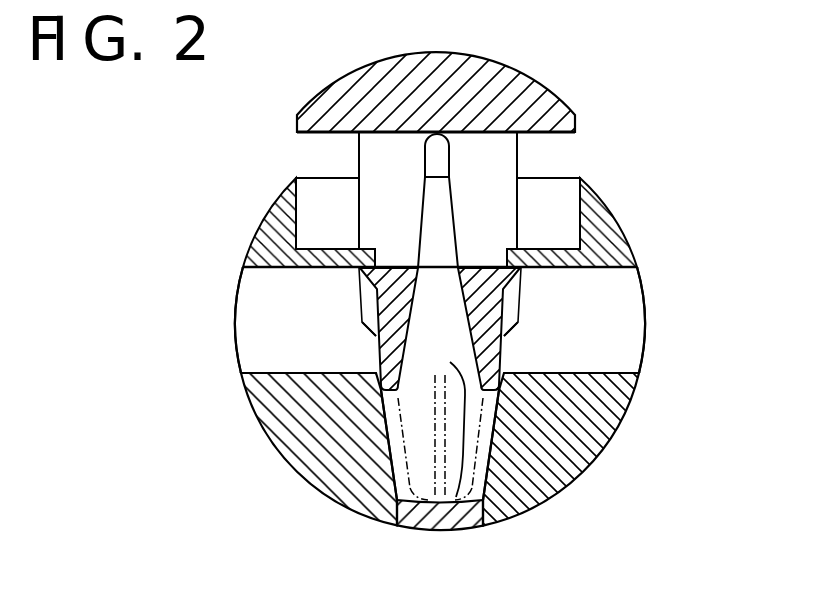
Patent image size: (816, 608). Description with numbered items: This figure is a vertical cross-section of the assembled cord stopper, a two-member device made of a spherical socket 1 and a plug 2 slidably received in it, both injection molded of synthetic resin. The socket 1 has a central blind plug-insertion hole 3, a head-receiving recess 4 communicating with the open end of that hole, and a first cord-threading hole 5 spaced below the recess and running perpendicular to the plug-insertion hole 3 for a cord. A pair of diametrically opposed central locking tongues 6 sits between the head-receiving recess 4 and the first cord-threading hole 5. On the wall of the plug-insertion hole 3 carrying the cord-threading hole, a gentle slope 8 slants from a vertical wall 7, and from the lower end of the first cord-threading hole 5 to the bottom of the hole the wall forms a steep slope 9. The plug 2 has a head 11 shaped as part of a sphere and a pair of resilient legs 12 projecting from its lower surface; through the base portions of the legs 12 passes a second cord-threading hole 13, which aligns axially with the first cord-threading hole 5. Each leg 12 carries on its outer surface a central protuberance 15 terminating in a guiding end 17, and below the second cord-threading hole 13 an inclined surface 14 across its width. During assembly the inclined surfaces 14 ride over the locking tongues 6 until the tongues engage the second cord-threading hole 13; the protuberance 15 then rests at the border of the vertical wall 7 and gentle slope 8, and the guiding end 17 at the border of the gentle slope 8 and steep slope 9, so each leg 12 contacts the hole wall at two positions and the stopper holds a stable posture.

The spherical socket 1 is at (611, 439).
The plug 2 is at (549, 80).
The plug-insertion hole 3 is at (454, 486).
The head-receiving recess 4 is at (560, 200).
The first cord-threading hole 5 is at (598, 343).
The locking tongue 6 is at (377, 256).
The vertical wall 7 is at (360, 286).
The gentle slope 8 is at (365, 353).
The steep slope 9 is at (392, 446).
The head 11 is at (362, 97).
The resilient leg 12 is at (357, 162).
The second cord-threading hole 13 is at (508, 155).
The inclined surface 14 is at (520, 280).
The protuberance 15 is at (363, 320).
The guiding end 17 is at (380, 396).